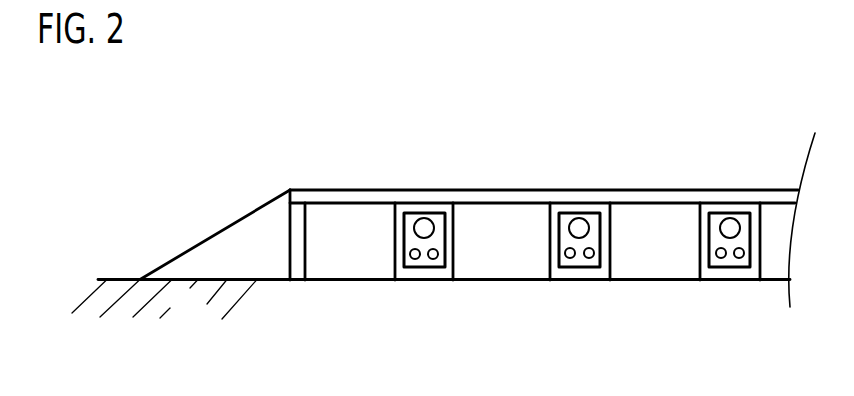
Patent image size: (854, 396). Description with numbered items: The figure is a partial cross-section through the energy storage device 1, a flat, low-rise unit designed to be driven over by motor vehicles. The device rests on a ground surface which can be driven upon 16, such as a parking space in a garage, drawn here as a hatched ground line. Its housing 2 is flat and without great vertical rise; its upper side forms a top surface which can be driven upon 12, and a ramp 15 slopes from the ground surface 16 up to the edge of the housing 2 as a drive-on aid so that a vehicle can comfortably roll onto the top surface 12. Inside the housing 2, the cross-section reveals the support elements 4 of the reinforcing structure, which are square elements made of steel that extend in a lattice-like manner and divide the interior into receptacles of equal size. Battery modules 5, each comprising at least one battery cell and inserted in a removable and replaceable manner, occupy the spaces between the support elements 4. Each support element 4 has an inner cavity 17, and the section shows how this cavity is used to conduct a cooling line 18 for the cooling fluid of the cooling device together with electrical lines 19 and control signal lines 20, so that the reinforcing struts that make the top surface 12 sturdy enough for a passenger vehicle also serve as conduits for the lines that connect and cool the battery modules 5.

The energy storage device 1 is at (327, 131).
The housing 2 is at (290, 225).
The support elements 4 is at (453, 207).
The battery modules 5 is at (362, 262).
The top surface which can be driven upon 12 is at (687, 190).
The ramps 15 is at (222, 258).
The ground surface which can be driven upon 16 is at (194, 320).
The inner cavity 17 is at (413, 238).
The cooling line 18 is at (432, 213).
The electrical lines 19 is at (417, 258).
The control signal lines 20 is at (438, 259).